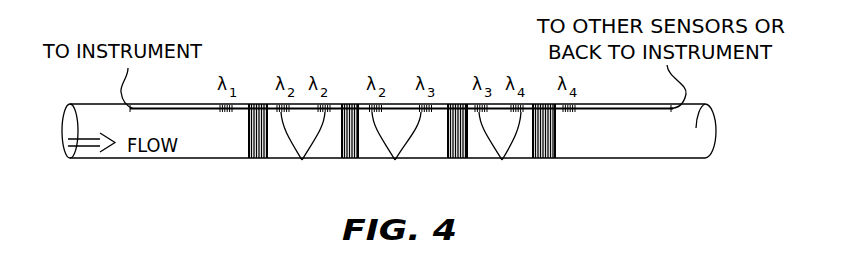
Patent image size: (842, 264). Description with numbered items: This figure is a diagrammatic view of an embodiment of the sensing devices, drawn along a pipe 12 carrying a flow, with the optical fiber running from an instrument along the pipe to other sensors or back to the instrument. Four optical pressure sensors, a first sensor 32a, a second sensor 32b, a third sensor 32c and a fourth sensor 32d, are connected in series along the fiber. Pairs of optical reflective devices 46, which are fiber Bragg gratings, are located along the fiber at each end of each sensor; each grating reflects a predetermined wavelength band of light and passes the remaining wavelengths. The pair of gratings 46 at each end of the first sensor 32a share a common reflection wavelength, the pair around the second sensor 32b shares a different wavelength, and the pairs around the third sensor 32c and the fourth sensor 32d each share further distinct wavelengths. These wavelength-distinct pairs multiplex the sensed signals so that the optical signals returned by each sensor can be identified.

The pipe 12 is at (670, 149).
The first sensor 32a is at (260, 162).
The second sensor 32b is at (352, 162).
The third sensor 32c is at (458, 162).
The fourth sensor 32d is at (543, 162).
The optical reflective device 46 is at (224, 113).